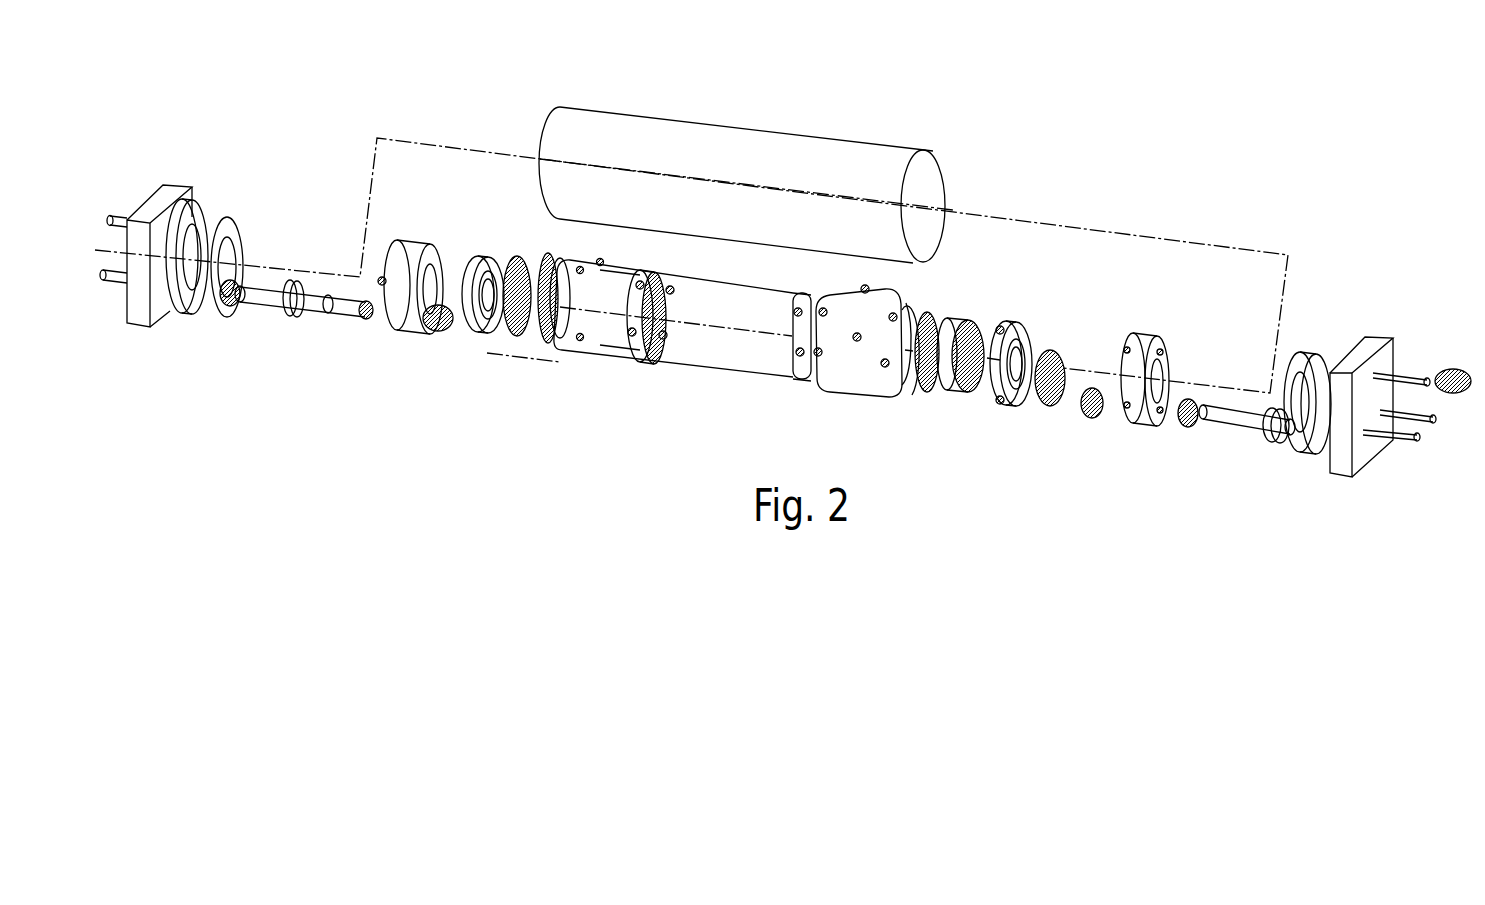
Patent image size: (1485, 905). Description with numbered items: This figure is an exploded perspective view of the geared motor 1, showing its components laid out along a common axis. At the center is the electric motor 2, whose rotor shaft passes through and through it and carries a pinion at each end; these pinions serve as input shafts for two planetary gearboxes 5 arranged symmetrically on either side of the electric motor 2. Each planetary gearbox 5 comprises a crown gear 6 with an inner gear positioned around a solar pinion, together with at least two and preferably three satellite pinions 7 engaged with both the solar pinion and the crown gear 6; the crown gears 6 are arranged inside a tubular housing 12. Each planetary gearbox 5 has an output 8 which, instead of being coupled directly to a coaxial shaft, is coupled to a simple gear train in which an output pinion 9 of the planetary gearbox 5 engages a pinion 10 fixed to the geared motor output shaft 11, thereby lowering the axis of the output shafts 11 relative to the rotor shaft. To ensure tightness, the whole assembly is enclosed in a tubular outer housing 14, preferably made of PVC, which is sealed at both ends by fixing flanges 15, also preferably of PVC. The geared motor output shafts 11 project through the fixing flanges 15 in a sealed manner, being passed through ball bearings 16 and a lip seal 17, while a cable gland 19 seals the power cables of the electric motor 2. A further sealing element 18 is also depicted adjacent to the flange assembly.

The geared motor 1 is at (725, 108).
The electric motor 2 is at (697, 363).
The planetary gearbox 5 is at (507, 357).
The crown gear 6 is at (660, 360).
The satellite pinion 7 is at (513, 253).
The output 8 is at (495, 270).
The output pinion 9 is at (462, 275).
The pinion 10 is at (437, 330).
The geared motor output shaft 11 is at (350, 310).
The tubular housing 12 is at (603, 343).
The tubular outer housing 14 is at (572, 148).
The fixing flange 15 is at (140, 330).
The ball bearing 16 is at (290, 317).
The lip seal 17 is at (237, 310).
The seal ring 18 is at (217, 310).
The cable gland 19 is at (1450, 393).